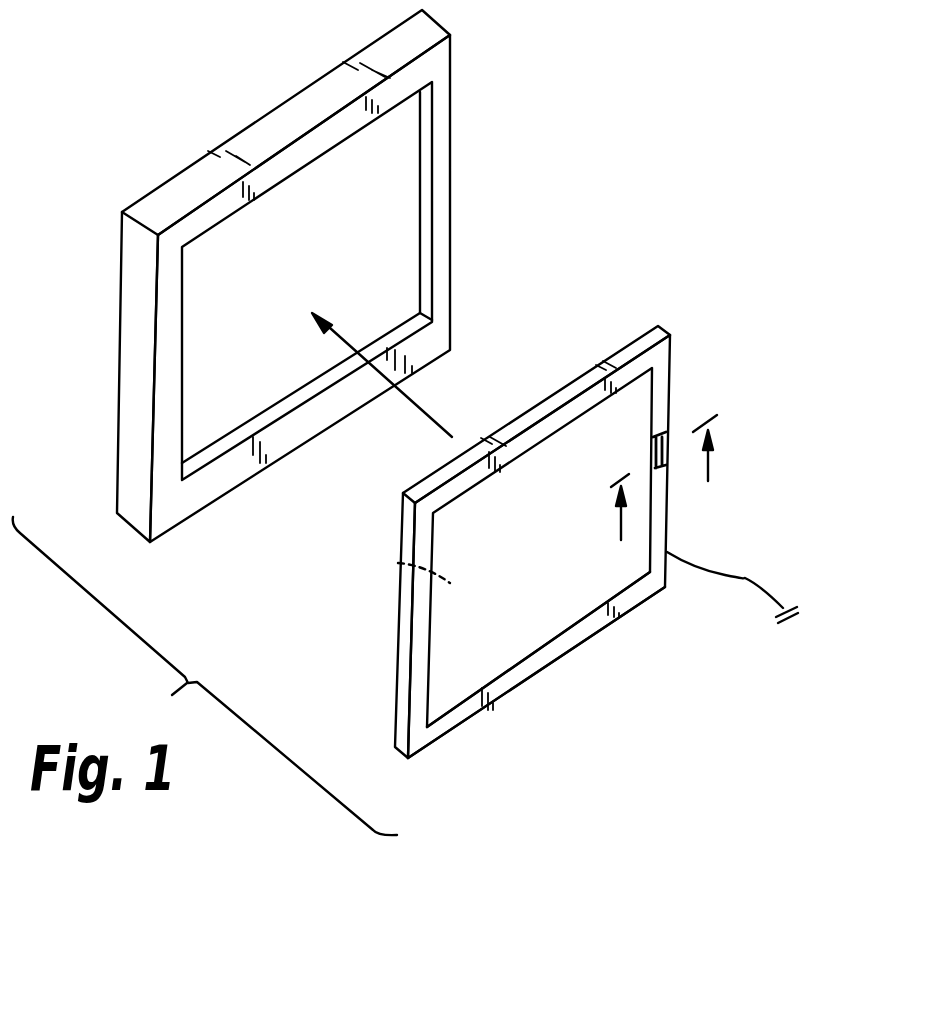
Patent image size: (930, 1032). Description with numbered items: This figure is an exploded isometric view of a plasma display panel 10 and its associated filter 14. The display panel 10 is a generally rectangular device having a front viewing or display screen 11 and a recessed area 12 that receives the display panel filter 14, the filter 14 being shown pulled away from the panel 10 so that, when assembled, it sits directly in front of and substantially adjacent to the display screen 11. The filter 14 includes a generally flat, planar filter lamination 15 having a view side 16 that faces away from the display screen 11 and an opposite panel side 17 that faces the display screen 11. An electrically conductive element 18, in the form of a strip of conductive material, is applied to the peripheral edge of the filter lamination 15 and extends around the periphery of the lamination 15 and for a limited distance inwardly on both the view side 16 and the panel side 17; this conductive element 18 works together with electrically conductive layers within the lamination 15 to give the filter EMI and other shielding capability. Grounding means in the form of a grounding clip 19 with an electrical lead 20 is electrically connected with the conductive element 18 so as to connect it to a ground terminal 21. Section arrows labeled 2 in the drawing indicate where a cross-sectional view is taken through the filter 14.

The plasma display panel 10 is at (440, 63).
The display screen 11 is at (390, 198).
The recessed area 12 is at (412, 280).
The filter 14 is at (700, 340).
The filter lamination 15 is at (535, 617).
The view side 16 is at (553, 555).
The panel side 17 is at (398, 563).
The electrically conductive element 18 is at (495, 698).
The grounding clip 19 is at (668, 442).
The electrical lead 20 is at (745, 578).
The ground terminal 21 is at (790, 625).
The section line for FIG. 2 is at (669, 498).